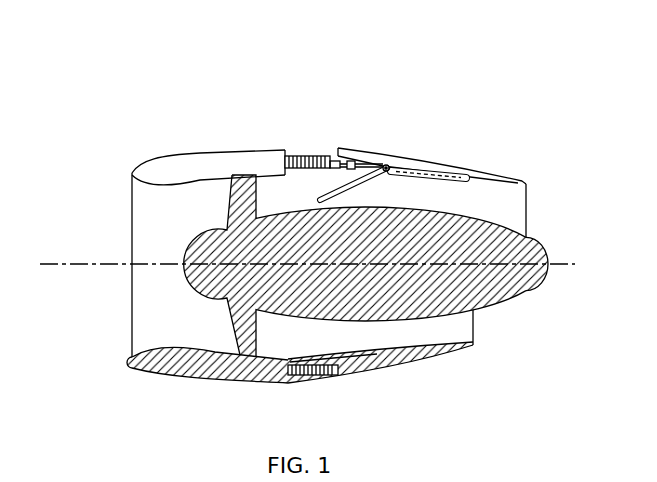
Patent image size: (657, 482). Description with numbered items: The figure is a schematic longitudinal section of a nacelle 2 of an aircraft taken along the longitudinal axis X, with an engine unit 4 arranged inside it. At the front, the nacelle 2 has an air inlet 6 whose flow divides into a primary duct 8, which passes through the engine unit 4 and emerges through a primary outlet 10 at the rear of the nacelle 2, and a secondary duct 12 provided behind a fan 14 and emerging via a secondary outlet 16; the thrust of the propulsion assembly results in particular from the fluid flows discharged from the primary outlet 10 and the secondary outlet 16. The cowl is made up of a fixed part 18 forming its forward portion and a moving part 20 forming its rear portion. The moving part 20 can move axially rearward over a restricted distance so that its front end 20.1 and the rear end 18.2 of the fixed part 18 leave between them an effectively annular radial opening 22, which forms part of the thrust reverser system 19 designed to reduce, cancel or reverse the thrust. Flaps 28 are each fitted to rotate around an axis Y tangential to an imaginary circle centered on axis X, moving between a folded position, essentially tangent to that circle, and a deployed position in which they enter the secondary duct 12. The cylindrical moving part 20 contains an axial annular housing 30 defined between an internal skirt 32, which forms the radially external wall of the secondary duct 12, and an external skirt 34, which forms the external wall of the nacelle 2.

The nacelle 2 is at (288, 100).
The engine unit 4 is at (510, 220).
The air inlet 6 is at (130, 198).
The primary duct 8 is at (528, 239).
The primary outlet 10 is at (529, 286).
The secondary duct 12 is at (423, 335).
The fan 14 is at (172, 193).
The secondary outlet 16 is at (473, 342).
The fixed part 18 is at (195, 163).
The rear end of the fixed part 18.2 is at (287, 148).
The thrust reverser system 19 is at (368, 133).
The moving part 20 is at (513, 173).
The front end of the moving part 20.1 is at (338, 148).
The radial opening 22 is at (312, 157).
The flaps 28 is at (362, 180).
The axial annular housing 30 is at (462, 175).
The internal skirt 32 is at (423, 176).
The external skirt 34 is at (427, 167).
The longitudinal axis X is at (53, 263).
The axis of rotation of the flap Y is at (392, 163).